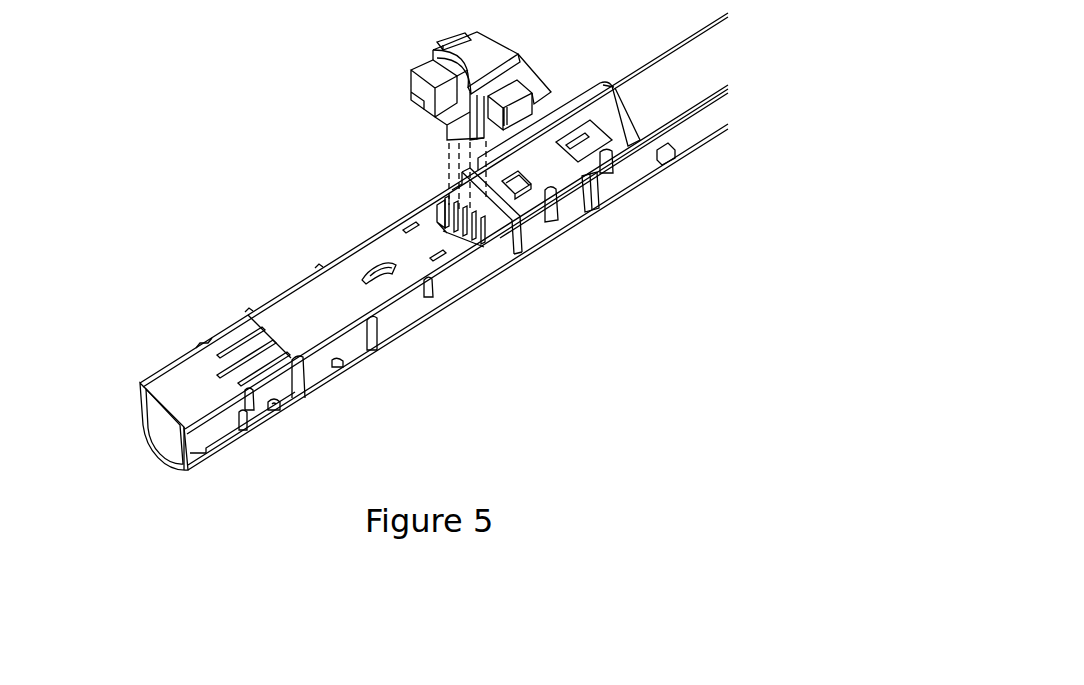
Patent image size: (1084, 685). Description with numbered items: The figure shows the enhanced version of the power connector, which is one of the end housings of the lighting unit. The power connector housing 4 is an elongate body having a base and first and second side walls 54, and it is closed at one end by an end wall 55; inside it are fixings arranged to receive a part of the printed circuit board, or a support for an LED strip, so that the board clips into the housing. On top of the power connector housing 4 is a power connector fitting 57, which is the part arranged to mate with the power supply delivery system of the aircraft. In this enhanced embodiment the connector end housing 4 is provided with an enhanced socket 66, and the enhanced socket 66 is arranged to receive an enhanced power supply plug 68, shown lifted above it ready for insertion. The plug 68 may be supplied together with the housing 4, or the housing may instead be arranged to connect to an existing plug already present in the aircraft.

The power connector housing 4 is at (450, 283).
The side walls 54 is at (387, 323).
The end wall 55 is at (153, 408).
The power connector fitting 57 is at (512, 262).
The enhanced socket 66 is at (445, 197).
The enhanced power supply plug 68 is at (424, 67).